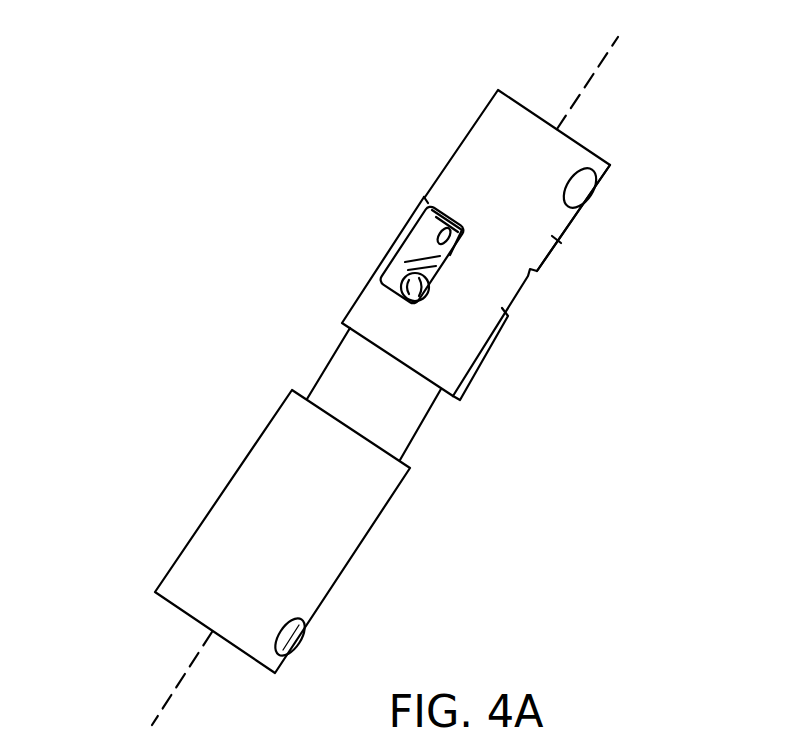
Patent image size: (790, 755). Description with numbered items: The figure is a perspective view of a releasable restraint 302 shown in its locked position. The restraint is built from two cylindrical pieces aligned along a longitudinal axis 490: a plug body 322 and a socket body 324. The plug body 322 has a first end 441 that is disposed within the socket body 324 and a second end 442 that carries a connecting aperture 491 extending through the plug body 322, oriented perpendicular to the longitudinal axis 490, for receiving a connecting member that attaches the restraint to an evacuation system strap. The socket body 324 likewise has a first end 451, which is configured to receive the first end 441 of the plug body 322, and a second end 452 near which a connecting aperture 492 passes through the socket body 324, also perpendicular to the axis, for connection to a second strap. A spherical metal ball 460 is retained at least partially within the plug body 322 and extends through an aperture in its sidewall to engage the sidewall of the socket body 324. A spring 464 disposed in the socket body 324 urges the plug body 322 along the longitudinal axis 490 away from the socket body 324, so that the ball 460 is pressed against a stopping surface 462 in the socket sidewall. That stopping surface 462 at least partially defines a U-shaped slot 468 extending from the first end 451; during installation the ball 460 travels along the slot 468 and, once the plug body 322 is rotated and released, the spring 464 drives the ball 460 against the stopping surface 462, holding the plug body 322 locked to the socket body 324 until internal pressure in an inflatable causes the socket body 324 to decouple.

The releasable restraint 302 is at (249, 152).
The second end of socket body 452 is at (527, 85).
The socket body 324 is at (557, 240).
The connecting aperture 492 is at (587, 185).
The longitudinal axis 490 is at (612, 47).
The first end of plug body 441 is at (398, 208).
The spring 464 is at (407, 248).
The slot 468 is at (428, 289).
The ball 460 is at (420, 292).
The stopping surface 462 is at (399, 278).
The first end of socket body 451 is at (471, 427).
The plug body 322 is at (348, 533).
The connecting aperture 491 is at (288, 637).
The second end of plug body 442 is at (148, 626).